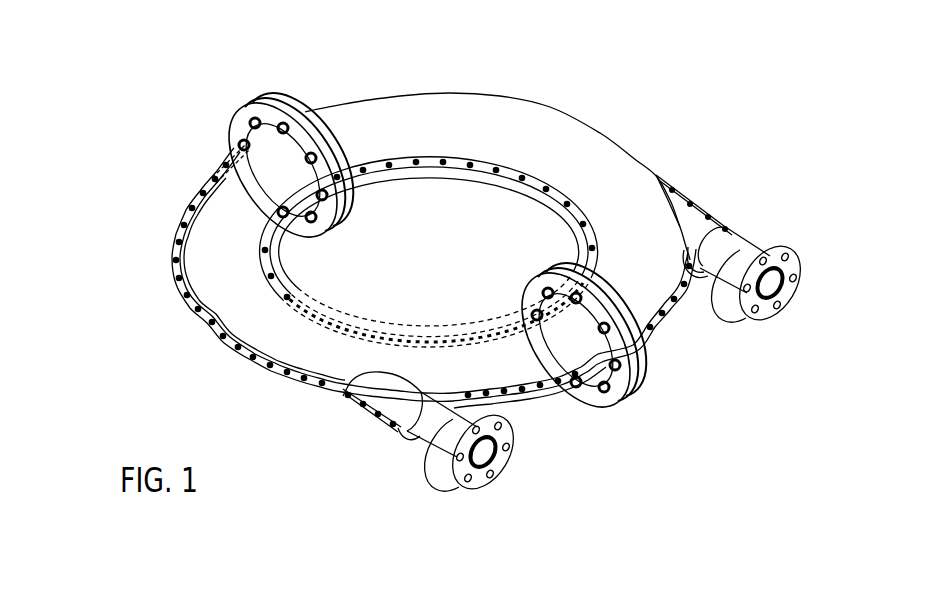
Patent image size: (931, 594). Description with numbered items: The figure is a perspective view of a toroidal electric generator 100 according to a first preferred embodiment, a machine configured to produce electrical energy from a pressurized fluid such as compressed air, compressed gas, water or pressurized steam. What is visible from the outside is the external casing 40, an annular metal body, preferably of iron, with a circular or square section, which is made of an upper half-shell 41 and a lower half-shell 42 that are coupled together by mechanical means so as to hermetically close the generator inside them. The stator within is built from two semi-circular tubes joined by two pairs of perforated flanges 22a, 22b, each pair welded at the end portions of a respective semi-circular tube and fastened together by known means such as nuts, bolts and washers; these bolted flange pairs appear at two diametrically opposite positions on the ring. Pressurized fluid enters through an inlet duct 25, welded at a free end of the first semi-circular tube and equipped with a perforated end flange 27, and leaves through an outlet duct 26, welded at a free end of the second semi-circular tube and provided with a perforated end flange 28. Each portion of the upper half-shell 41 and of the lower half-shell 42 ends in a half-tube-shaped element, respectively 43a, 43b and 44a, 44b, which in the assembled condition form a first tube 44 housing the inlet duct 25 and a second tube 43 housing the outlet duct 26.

The toroidal electric generator 100 is at (648, 105).
The external casing 40 is at (168, 241).
The upper half-shell 41 is at (520, 120).
The lower half-shell 42 is at (417, 177).
The perforated flange 22a is at (280, 103).
The perforated flange 22b is at (233, 127).
The inlet duct 25 is at (720, 257).
The perforated end flange 27 is at (797, 290).
The outlet duct 26 is at (443, 427).
The perforated end flange 28 is at (490, 473).
The second tube 43 is at (370, 423).
The half-tube-shaped element 43a is at (400, 390).
The half-tube-shaped element 43b is at (413, 440).
The first tube 44 is at (707, 210).
The half-tube-shaped element 44a is at (687, 220).
The half-tube-shaped element 44b is at (703, 272).